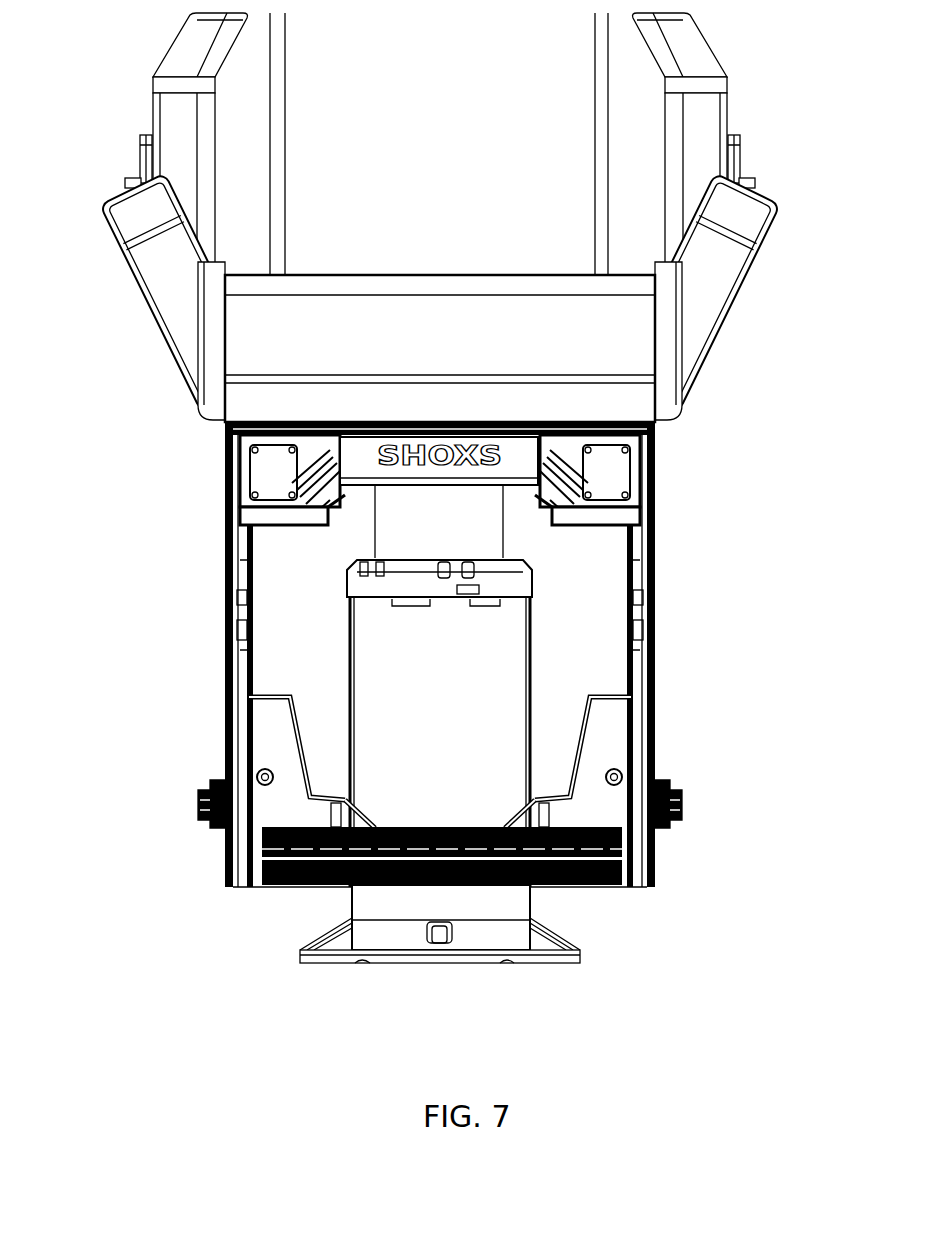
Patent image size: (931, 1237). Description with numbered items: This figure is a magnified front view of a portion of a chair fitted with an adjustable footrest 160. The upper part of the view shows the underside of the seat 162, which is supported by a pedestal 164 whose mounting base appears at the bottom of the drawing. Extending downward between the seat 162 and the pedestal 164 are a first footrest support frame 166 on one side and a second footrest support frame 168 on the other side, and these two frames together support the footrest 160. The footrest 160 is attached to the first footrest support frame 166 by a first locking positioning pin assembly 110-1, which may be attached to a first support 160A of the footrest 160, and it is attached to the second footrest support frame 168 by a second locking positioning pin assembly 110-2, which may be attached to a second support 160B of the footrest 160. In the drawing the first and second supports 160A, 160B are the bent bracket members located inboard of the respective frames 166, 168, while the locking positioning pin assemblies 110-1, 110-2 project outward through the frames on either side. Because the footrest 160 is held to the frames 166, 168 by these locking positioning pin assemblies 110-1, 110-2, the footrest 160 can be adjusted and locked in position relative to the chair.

The seat 162 is at (273, 312).
The second footrest support frame 168 is at (223, 668).
The first footrest support frame 166 is at (643, 680).
The second support 160B is at (257, 697).
The first support 160A is at (632, 737).
The adjustable footrest 160 is at (262, 887).
The pedestal 164 is at (410, 897).
The second locking positioning pin assembly 110-2 is at (198, 803).
The first locking positioning pin assembly 110-1 is at (682, 807).